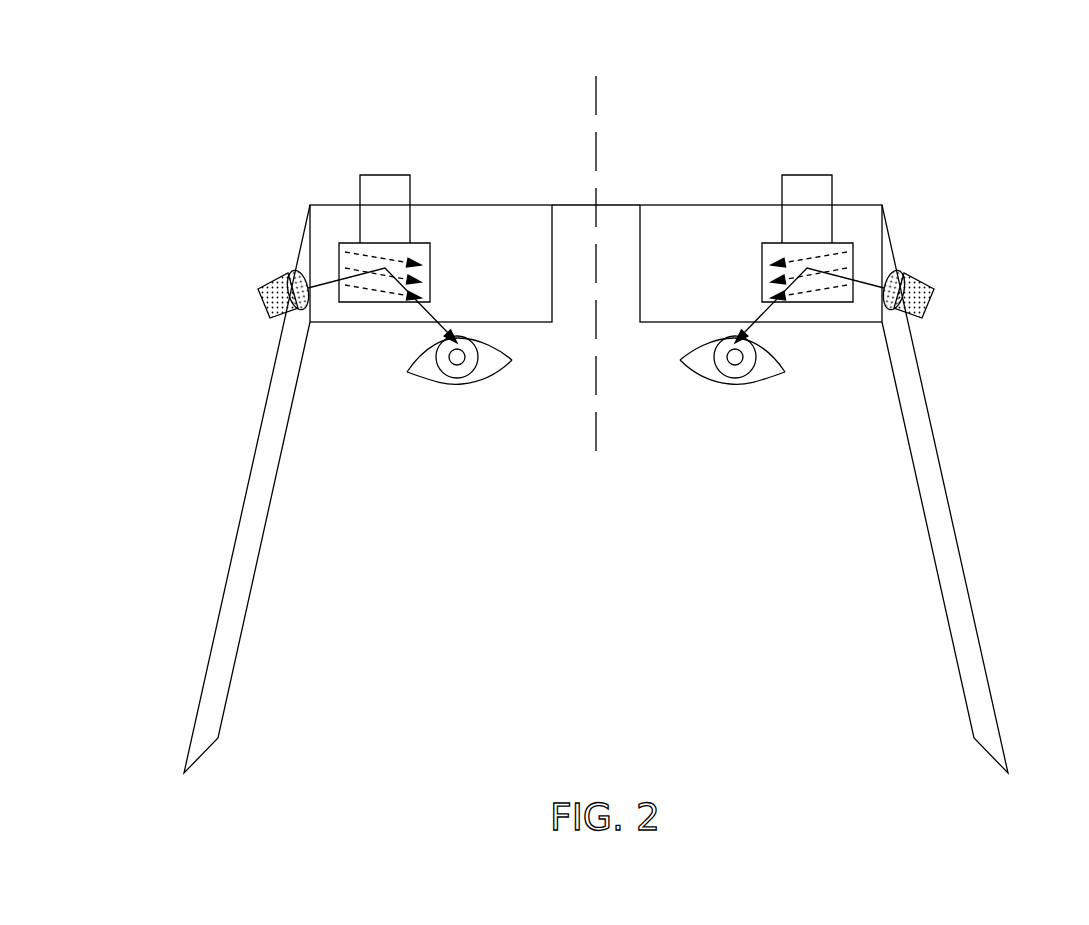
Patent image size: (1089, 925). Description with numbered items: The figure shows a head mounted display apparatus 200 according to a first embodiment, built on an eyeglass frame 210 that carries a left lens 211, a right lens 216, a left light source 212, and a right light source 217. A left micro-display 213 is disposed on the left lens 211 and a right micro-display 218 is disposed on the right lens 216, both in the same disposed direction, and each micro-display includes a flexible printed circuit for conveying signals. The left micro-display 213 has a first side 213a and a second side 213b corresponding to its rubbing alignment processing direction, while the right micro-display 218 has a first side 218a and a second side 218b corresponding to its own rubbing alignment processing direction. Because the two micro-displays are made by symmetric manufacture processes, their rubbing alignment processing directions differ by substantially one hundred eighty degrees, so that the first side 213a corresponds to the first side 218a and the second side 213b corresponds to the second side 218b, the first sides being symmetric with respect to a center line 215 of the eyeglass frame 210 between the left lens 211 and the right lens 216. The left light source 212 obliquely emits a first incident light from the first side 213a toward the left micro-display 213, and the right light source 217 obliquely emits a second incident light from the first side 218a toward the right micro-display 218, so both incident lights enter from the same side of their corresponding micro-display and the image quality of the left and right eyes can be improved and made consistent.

The head mounted display apparatus 200 is at (139, 83).
The eyeglass frame 210 is at (927, 453).
The left lens 211 is at (505, 224).
The left light source 212 is at (262, 300).
The left micro-display 213 is at (360, 303).
The first side of the left micro-display 213a is at (301, 188).
The second side of the left micro-display 213b is at (468, 188).
The center line 215 is at (606, 82).
The right lens 216 is at (687, 224).
The right light source 217 is at (930, 300).
The right micro-display 218 is at (832, 303).
The first side of the right micro-display 218a is at (890, 188).
The second side of the right micro-display 218b is at (723, 188).